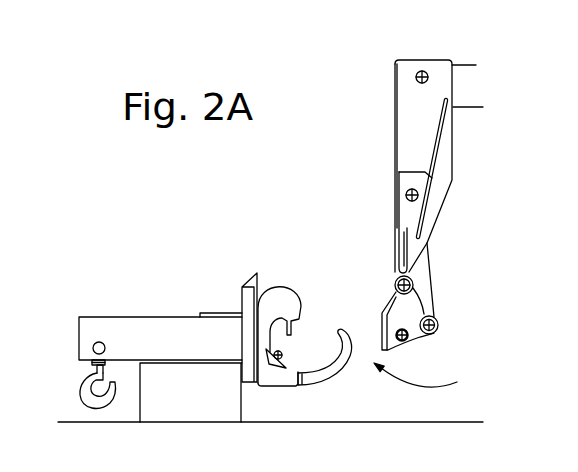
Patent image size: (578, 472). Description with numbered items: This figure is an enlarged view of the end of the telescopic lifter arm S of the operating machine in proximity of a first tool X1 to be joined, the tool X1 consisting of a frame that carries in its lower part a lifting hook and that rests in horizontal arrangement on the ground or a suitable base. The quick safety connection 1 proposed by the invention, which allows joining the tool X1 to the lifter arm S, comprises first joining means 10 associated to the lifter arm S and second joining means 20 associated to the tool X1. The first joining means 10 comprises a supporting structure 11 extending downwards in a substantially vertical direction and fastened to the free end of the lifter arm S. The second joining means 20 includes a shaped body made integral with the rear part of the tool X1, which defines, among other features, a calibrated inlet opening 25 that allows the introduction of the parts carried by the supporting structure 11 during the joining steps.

The tool X1 is at (122, 297).
The second joining means 20 is at (293, 266).
The calibrated inlet opening 25 is at (316, 320).
The first joining means 10 is at (467, 257).
The supporting structure 11 is at (398, 110).
The telescopic lifter arm S is at (475, 71).
The quick safety connection 1 is at (423, 375).